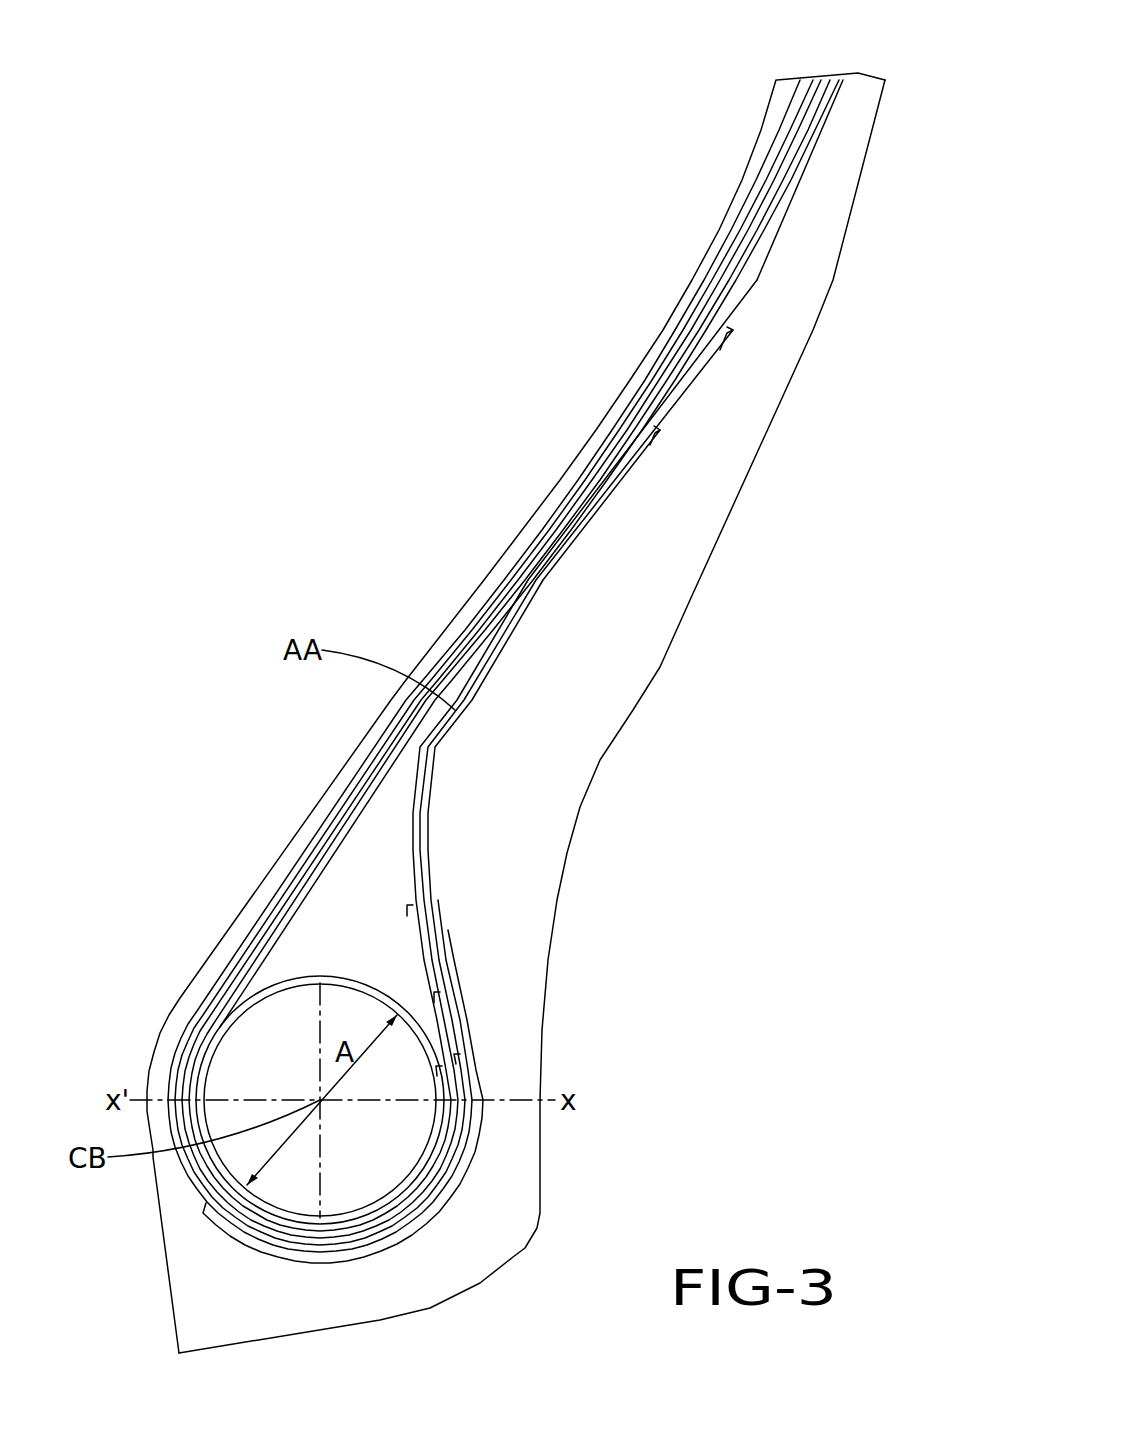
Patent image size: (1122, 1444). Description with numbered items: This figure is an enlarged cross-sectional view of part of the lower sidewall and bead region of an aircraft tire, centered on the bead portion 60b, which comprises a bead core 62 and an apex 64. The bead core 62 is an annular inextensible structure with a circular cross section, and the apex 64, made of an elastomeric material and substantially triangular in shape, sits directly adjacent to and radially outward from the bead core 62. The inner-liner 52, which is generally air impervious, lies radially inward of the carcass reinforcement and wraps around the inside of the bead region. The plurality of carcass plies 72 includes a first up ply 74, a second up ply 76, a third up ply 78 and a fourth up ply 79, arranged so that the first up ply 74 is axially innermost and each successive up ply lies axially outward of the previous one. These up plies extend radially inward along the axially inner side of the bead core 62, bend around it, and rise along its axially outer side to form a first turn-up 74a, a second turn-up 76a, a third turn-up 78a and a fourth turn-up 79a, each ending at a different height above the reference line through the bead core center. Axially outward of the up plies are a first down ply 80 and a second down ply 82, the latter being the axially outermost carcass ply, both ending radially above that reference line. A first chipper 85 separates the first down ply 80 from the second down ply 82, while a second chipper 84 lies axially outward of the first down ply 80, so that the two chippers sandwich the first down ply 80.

The plurality of carcass plies 72 is at (785, 48).
The first up ply 74 is at (777, 152).
The second up ply 76 is at (770, 190).
The third up ply 78 is at (762, 228).
The fourth up ply 79 is at (747, 268).
The first down ply 80 is at (762, 255).
The second down ply 82 is at (690, 410).
The second chipper 84 is at (608, 525).
The first chipper 85 is at (720, 350).
The first turn-up 74a is at (460, 1057).
The second turn-up 76a is at (440, 995).
The third turn-up 78a is at (415, 908).
The fourth turn-up 79a is at (440, 1068).
The inner-liner 52 is at (172, 1030).
The bead core 62 is at (379, 1152).
The apex 64 is at (379, 928).
The bead portion 60b is at (160, 1307).